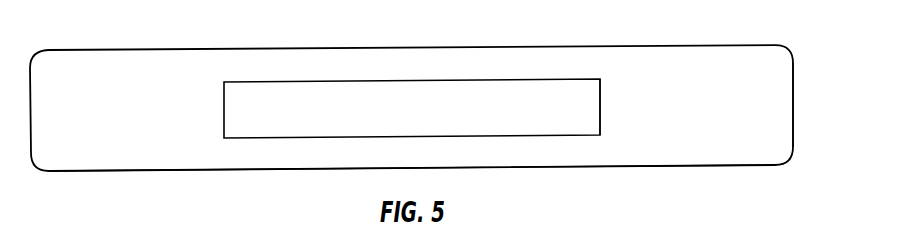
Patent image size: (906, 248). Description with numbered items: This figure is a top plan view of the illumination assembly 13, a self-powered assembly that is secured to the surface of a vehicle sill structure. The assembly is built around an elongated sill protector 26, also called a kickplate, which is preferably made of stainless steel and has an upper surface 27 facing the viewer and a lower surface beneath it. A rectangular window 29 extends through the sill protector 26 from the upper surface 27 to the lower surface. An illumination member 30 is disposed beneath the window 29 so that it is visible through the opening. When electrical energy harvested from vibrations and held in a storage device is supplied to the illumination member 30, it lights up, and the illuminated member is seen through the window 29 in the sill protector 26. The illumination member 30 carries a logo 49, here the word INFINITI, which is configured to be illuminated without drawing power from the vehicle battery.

The illumination assembly 13 is at (129, 49).
The sill protector 26 is at (690, 167).
The upper surface 27 is at (772, 105).
The window 29 is at (600, 105).
The illumination member 30 is at (550, 105).
The logo 49 is at (346, 110).